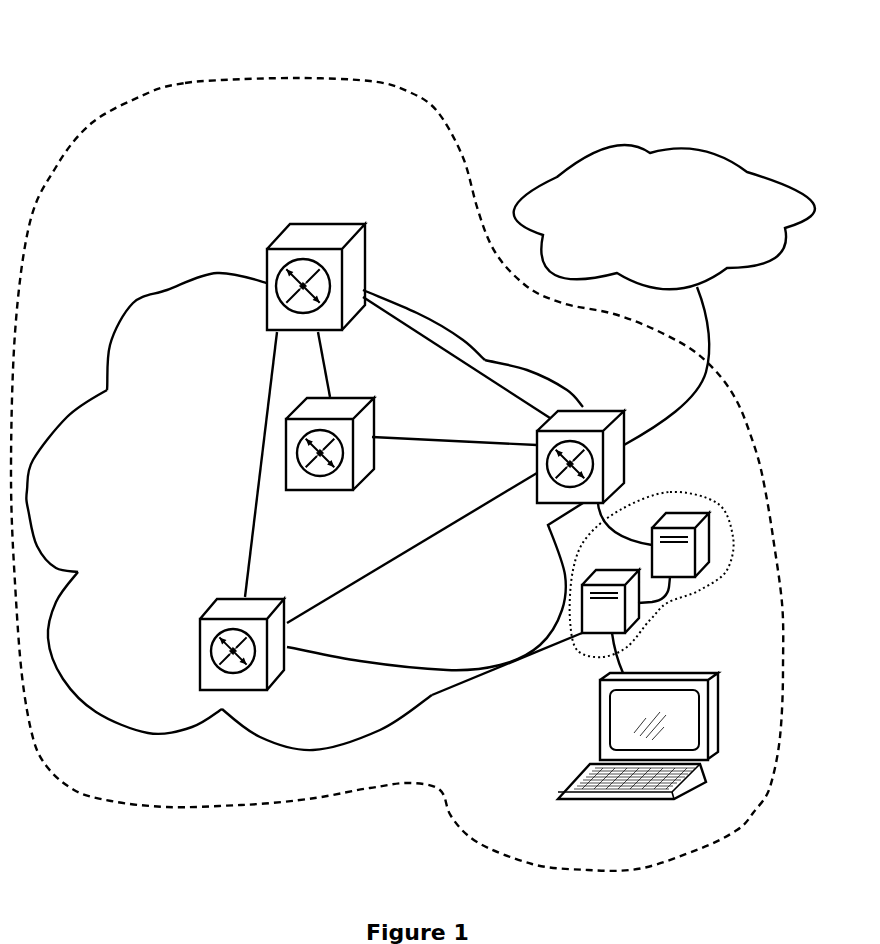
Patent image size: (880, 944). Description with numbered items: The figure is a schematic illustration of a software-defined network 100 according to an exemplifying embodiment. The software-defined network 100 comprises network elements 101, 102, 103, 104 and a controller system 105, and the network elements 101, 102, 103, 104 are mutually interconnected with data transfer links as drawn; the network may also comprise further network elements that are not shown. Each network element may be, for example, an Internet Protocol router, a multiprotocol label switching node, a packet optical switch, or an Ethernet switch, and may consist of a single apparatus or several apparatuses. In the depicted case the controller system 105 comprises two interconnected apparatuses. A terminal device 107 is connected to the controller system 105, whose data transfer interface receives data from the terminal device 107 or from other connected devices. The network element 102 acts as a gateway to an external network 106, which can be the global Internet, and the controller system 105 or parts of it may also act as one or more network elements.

The software-defined network 100 is at (189, 83).
The network element 101 is at (200, 684).
The network element 102 is at (599, 411).
The network element 103 is at (348, 398).
The network element 104 is at (266, 246).
The controller system 105 is at (683, 491).
The external network 106 is at (649, 223).
The terminal device 107 is at (707, 670).